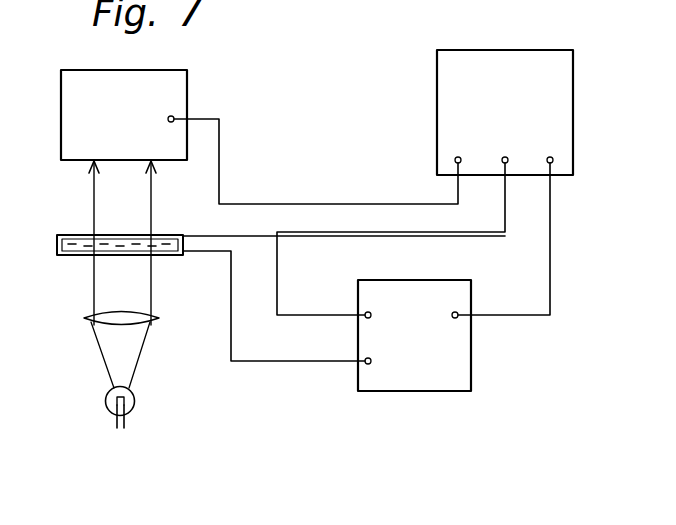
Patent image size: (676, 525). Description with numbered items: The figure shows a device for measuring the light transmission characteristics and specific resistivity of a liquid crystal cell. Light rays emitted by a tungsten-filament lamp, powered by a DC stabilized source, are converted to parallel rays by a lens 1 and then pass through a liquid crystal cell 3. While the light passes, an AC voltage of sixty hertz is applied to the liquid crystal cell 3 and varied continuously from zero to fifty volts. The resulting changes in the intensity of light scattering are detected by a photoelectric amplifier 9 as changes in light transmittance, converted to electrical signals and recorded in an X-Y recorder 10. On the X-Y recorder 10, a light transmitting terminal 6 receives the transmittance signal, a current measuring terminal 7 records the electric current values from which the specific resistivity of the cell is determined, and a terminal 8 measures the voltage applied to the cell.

The lens 1 is at (94, 323).
The liquid crystal cell 3 is at (67, 235).
The light transmitting terminal 6 is at (457, 146).
The current measuring terminal 7 is at (504, 146).
The terminal for measuring the voltage applied 8 is at (549, 146).
The photoelectric amplifier 9 is at (112, 129).
The X-Y recorder 10 is at (493, 117).